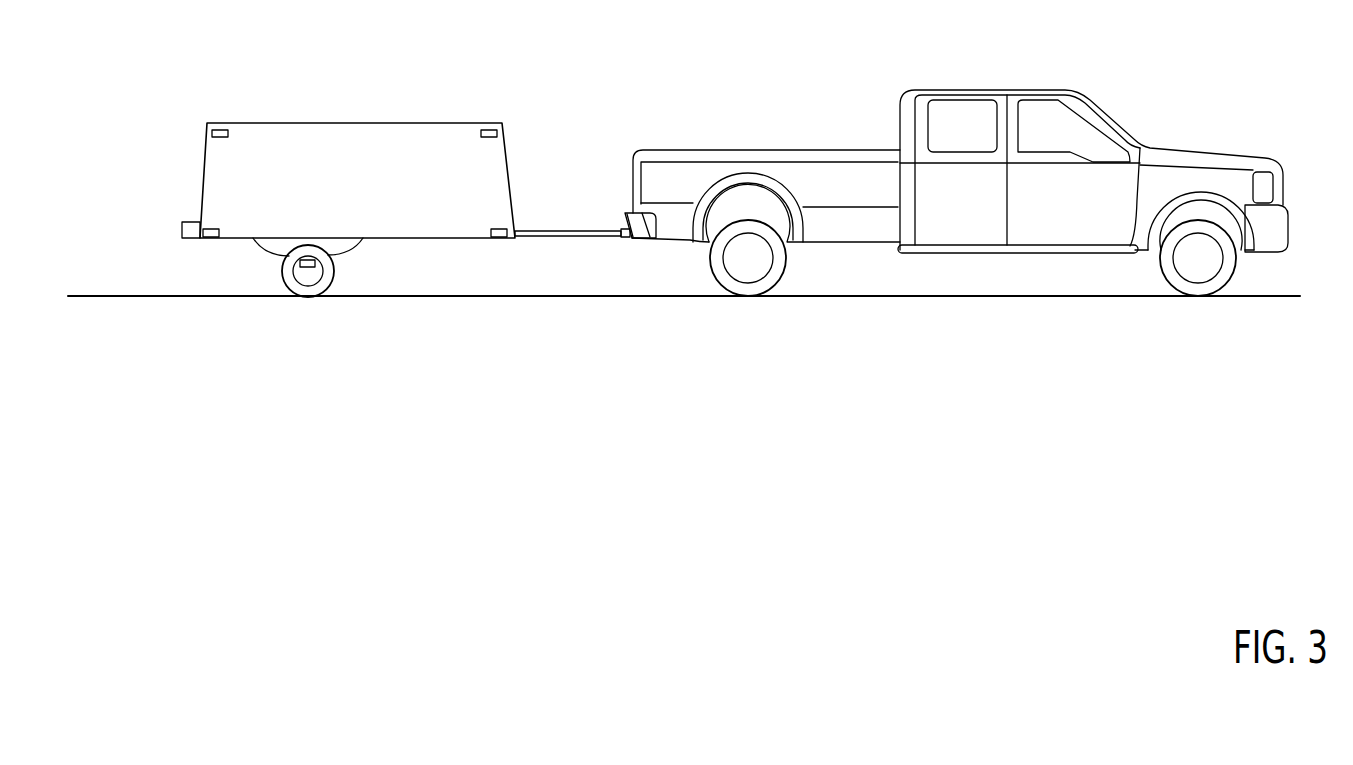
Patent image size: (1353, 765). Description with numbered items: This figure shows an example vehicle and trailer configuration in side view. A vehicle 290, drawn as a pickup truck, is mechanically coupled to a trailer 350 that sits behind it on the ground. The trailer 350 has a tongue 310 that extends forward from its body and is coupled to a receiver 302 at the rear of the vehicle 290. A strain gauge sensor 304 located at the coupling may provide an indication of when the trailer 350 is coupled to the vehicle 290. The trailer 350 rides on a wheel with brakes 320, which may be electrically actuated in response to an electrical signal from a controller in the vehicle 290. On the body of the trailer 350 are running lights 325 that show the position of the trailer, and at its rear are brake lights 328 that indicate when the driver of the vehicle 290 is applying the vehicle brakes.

The vehicle 290 is at (684, 38).
The receiver 302 is at (632, 238).
The strain gauge sensor 304 is at (622, 237).
The tongue 310 is at (538, 240).
The brakes 320 is at (312, 267).
The running lights 325 is at (222, 138).
The brake lights 328 is at (192, 240).
The trailer 350 is at (218, 122).